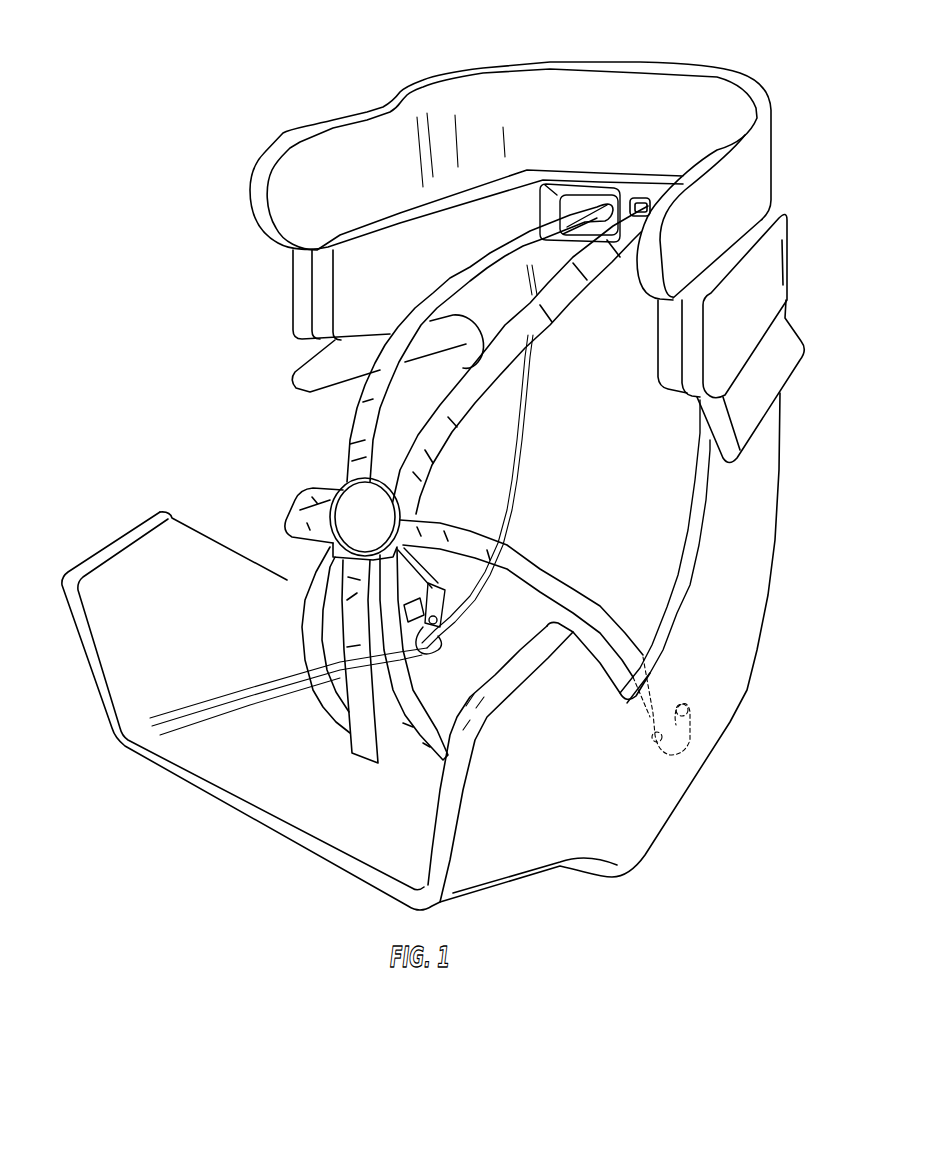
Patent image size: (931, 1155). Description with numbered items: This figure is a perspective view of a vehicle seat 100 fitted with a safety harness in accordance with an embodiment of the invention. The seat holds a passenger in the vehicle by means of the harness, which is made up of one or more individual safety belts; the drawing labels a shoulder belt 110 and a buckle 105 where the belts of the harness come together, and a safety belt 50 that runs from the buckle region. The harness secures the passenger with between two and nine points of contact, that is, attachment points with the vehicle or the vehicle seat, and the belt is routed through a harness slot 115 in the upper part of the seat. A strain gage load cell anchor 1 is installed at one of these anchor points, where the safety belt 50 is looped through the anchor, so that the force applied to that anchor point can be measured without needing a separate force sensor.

The child safety seat 100 is at (780, 598).
The shoulder harness strap 110 is at (336, 443).
The buckle 105 is at (352, 507).
The safety belt 50 is at (293, 510).
The harness slot 115 is at (598, 203).
The strain gage load cell anchor 1 is at (447, 600).